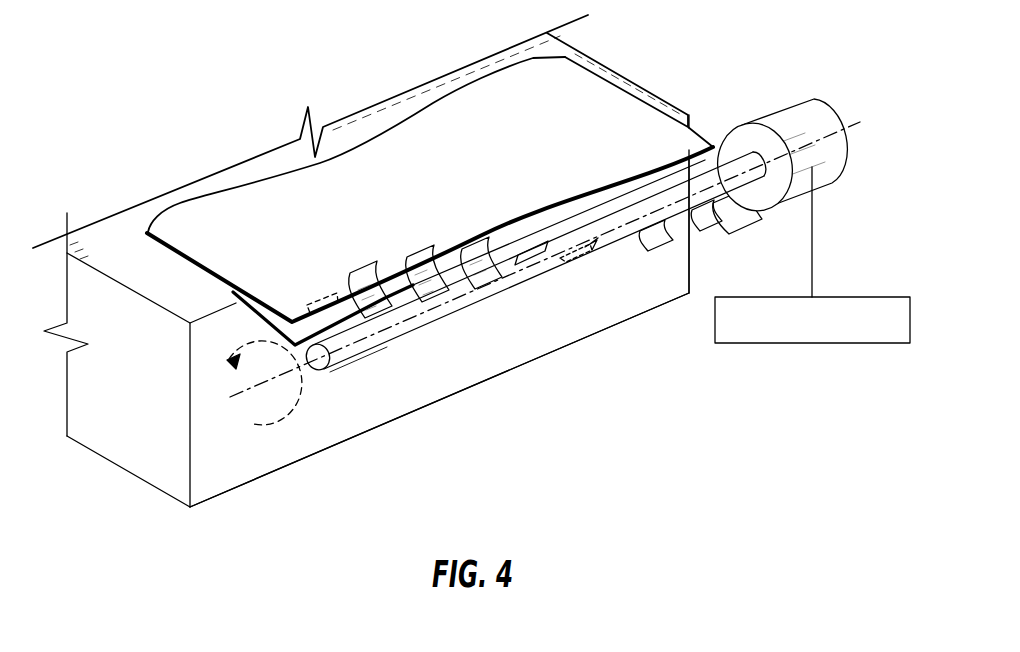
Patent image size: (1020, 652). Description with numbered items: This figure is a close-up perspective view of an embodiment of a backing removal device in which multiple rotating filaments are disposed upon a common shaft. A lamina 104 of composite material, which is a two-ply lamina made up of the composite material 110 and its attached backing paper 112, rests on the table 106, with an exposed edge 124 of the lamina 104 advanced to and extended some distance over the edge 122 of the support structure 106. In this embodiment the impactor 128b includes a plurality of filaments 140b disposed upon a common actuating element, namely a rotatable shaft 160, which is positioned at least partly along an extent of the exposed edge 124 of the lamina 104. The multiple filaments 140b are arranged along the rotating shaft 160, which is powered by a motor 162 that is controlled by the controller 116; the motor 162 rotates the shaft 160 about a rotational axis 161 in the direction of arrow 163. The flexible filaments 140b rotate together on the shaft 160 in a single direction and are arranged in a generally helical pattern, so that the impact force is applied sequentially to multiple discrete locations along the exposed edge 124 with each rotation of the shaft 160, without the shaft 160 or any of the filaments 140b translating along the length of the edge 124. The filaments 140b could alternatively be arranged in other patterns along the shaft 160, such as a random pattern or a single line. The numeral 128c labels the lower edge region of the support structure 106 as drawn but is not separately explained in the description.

The lamina 104 is at (378, 154).
The table 106 is at (107, 238).
The composite material 110 is at (345, 343).
The backing paper 112 is at (295, 308).
The controller 116 is at (813, 343).
The edge of the support structure 122 is at (218, 292).
The exposed edge 124 is at (582, 200).
The impactor 128b is at (528, 320).
The bottom edge 128c is at (477, 402).
The filaments 140b is at (480, 242).
The rotatable shaft 160 is at (387, 347).
The rotational axis 161 is at (241, 393).
The motor 162 is at (790, 120).
The arrow 163 is at (299, 399).